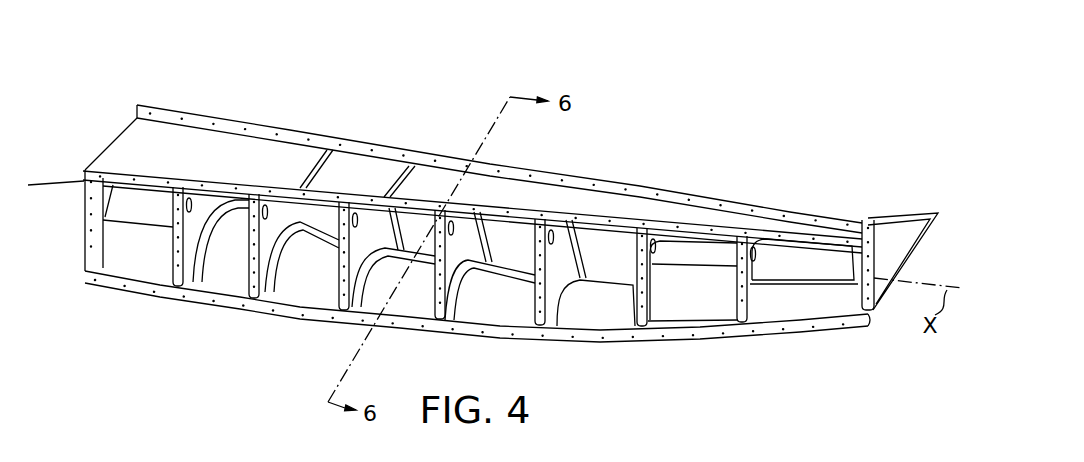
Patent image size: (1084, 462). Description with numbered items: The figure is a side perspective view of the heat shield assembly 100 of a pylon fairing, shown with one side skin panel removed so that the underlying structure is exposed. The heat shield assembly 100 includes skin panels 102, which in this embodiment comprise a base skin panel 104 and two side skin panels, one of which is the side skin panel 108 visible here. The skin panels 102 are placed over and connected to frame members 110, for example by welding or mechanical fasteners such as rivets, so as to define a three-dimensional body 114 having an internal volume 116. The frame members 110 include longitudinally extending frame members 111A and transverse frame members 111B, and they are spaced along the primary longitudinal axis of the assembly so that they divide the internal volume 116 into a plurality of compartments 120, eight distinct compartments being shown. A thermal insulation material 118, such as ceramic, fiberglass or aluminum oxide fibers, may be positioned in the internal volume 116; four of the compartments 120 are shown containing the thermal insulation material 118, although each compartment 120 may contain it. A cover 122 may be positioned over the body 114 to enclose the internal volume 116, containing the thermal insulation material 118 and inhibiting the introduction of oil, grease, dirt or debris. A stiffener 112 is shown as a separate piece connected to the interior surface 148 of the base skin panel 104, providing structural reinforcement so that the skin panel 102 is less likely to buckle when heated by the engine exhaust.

The heat shield assembly 100 is at (499, 134).
The skin panels 102 is at (410, 244).
The base skin panel 104 is at (462, 319).
The side skin panel 108 is at (521, 187).
The frame members 110 is at (135, 185).
The longitudinally extending frame members 111A is at (449, 200).
The transverse frame members 111B is at (467, 212).
The stiffener 112 is at (490, 278).
The three-dimensional body 114 is at (88, 260).
The internal volume 116 is at (314, 199).
The thermal insulation material 118 is at (137, 282).
The compartments 120 is at (700, 240).
The cover 122 is at (350, 172).
The interior surface 148 is at (612, 314).